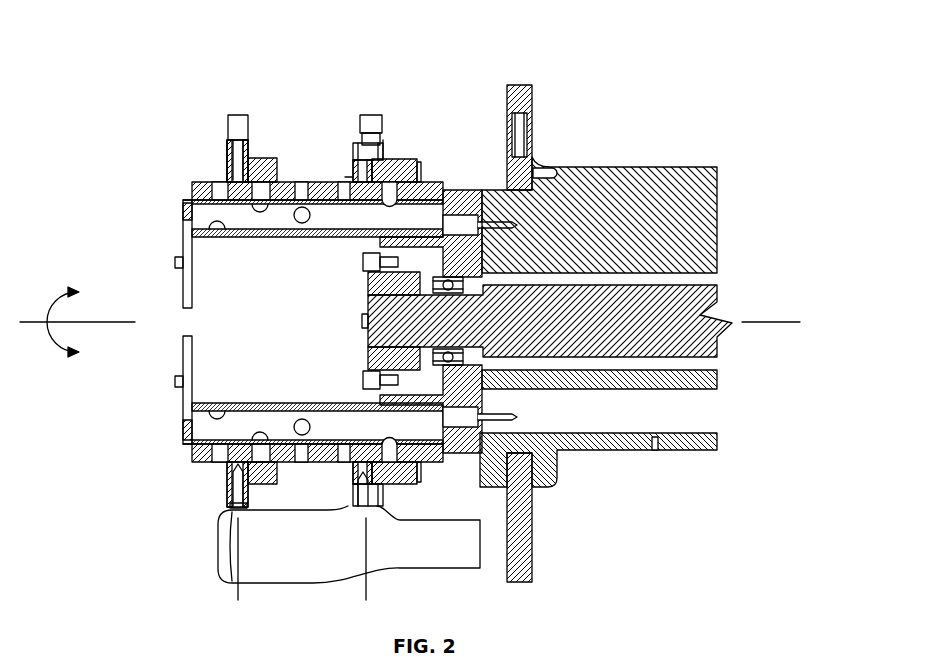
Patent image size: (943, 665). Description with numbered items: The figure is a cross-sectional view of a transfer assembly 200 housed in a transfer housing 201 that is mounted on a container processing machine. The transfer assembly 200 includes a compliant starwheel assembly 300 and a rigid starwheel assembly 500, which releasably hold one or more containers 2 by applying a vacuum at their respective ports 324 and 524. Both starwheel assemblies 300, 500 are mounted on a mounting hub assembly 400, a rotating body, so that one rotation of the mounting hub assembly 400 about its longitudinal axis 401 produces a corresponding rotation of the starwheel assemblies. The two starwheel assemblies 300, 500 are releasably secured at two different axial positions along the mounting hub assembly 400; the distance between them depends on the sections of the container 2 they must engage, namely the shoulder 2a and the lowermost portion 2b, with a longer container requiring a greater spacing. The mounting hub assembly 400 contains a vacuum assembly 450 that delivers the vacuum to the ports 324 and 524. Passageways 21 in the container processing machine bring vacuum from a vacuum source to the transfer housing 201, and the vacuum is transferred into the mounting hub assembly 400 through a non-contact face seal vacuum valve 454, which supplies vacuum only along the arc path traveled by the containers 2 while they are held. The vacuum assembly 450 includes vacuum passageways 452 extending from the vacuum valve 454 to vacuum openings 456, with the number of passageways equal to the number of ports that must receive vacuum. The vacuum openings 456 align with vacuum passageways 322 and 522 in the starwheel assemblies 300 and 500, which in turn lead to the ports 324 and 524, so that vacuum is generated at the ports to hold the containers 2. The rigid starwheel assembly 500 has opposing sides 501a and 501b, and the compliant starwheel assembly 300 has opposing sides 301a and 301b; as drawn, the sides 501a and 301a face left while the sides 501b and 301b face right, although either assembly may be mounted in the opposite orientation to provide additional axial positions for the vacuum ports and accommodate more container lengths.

The container 2 is at (280, 567).
The shoulder 2a is at (367, 570).
The lowermost portion 2b is at (230, 570).
The passageways 21 is at (667, 418).
The transfer assembly 200 is at (99, 184).
The transfer housing 201 is at (645, 167).
The compliant starwheel assembly 300 is at (400, 158).
The side of compliant starwheel assembly 301a is at (346, 178).
The side of compliant starwheel assembly 301b is at (387, 139).
The vacuum passageways 322 is at (409, 172).
The vacuum port 324 is at (369, 114).
The mounting hub assembly 400 is at (192, 186).
The longitudinal axis 401 is at (37, 340).
The vacuum assembly 450 is at (213, 237).
The vacuum passageways 452 is at (418, 212).
The non-contact face seal vacuum valve 454 is at (480, 440).
The vacuum openings 456 is at (389, 200).
The rigid starwheel assembly 500 is at (252, 178).
The side of rigid starwheel assembly 501a is at (220, 141).
The side of rigid starwheel assembly 501b is at (257, 140).
The vacuum passageways 522 is at (233, 176).
The vacuum port 524 is at (243, 114).